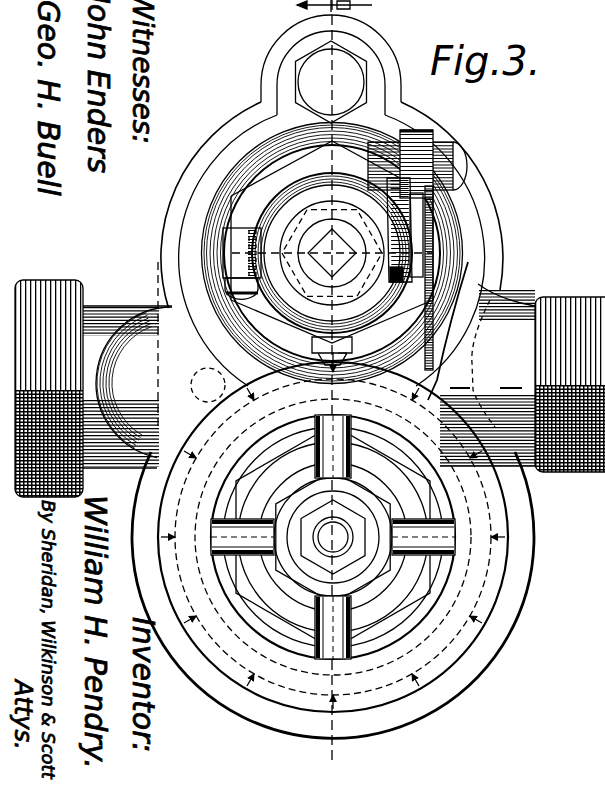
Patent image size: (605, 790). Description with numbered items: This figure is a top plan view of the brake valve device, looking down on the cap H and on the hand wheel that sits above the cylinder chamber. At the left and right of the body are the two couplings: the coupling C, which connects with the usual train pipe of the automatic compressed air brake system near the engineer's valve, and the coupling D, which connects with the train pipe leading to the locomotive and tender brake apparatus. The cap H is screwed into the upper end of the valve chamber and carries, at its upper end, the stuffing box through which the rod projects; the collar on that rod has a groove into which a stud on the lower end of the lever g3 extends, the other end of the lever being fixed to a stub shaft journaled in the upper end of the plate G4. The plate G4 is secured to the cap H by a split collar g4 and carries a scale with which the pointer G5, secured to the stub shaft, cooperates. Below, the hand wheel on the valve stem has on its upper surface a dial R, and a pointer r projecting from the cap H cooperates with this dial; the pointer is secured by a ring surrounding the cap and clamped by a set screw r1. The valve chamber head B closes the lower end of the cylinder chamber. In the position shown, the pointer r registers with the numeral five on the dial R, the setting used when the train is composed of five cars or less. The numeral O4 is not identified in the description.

The pointer r is at (322, 362).
The set screw r1 is at (345, 362).
The split collar g4 is at (224, 244).
The pointer G5 is at (497, 143).
The lever g3 is at (425, 222).
The coupling D is at (49, 388).
The coupling C is at (570, 384).
The plate G4 is at (487, 375).
The valve chamber head B is at (515, 590).
The dial R is at (480, 560).
The graduated dial O4 is at (455, 636).
The cap H is at (333, 537).